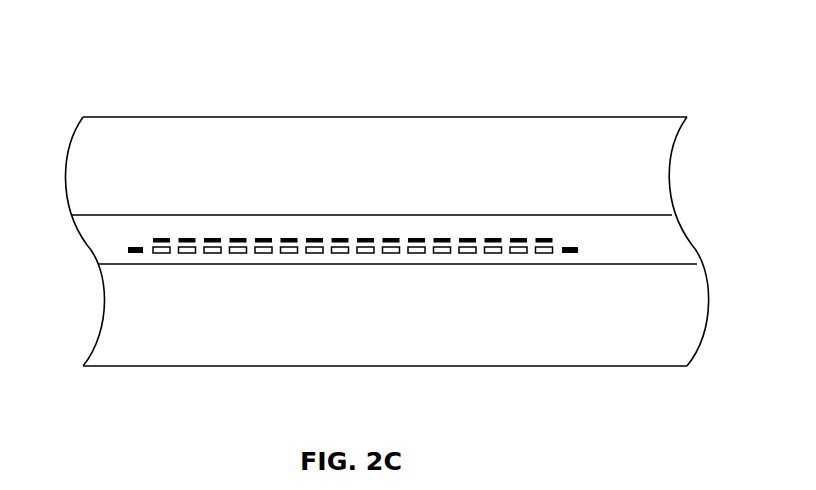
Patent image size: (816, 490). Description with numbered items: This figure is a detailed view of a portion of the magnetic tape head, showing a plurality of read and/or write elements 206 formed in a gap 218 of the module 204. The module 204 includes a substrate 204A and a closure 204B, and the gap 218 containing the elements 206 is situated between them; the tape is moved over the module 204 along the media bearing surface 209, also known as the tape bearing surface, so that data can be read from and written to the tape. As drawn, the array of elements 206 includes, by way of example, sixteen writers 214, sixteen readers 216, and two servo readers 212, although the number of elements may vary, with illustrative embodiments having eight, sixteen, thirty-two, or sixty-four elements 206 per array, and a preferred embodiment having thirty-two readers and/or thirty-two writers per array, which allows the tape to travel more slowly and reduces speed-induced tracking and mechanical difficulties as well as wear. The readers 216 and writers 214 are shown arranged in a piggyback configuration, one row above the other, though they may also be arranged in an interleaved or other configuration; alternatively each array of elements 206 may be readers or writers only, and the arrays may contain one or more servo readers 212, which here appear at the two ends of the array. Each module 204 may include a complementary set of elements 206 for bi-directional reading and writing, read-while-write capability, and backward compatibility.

The module 204 is at (98, 90).
The substrate 204A is at (185, 117).
The closure 204B is at (237, 366).
The media bearing surface 209 is at (314, 182).
The elements 206 is at (600, 233).
The gap 218 is at (688, 240).
The writers 214 is at (467, 240).
The readers 216 is at (468, 253).
The servo readers 212 is at (128, 248).